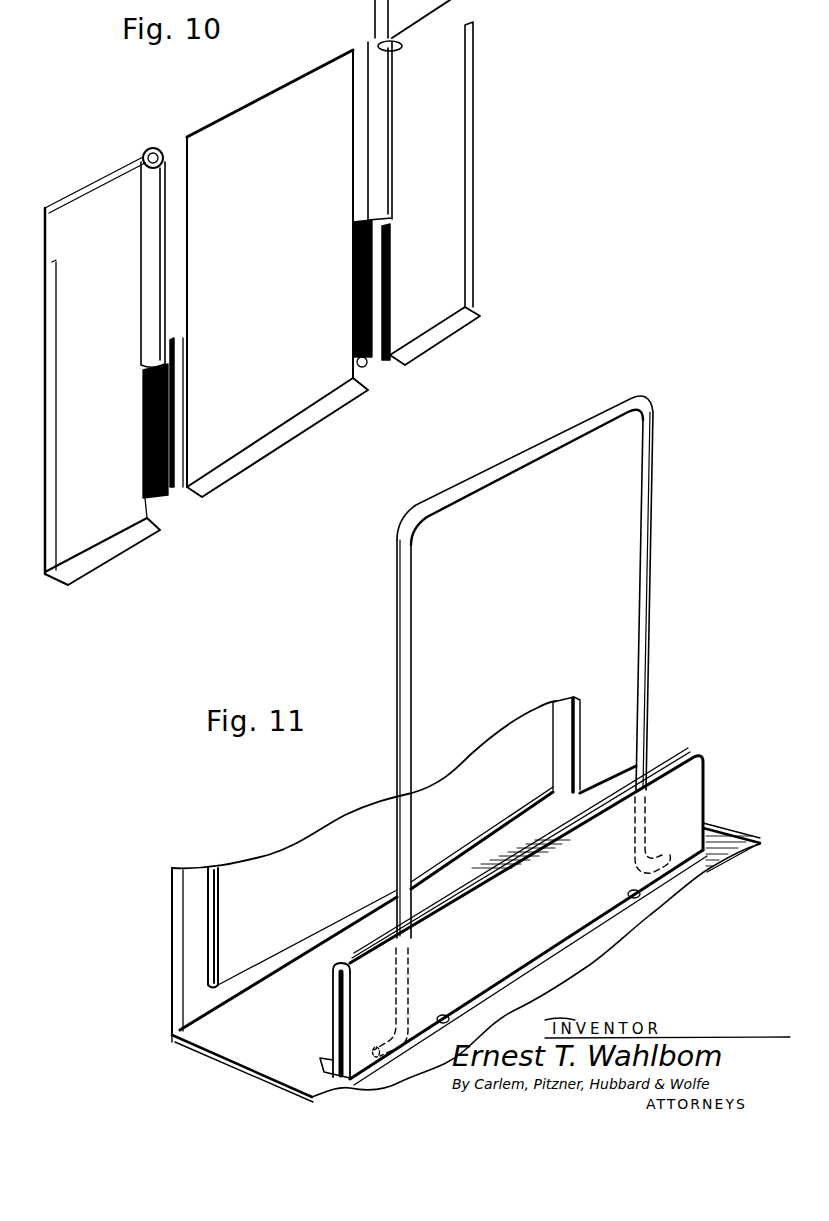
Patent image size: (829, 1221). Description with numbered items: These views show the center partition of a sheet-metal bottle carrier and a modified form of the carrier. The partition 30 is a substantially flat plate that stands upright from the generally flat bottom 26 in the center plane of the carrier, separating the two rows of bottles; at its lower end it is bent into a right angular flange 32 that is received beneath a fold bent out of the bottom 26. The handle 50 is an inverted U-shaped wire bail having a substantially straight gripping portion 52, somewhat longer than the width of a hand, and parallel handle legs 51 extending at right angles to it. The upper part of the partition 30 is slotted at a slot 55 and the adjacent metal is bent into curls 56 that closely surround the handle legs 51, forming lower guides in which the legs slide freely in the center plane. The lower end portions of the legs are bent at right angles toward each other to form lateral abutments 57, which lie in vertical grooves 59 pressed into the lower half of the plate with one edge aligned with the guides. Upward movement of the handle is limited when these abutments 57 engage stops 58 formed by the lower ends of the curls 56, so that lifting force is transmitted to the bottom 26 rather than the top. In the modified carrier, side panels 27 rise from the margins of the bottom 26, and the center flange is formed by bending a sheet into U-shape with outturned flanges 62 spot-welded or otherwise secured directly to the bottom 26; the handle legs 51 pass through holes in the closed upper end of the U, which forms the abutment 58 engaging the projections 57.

In FIG. 11, the bottom 26 is at (218, 1040).
In FIG. 11, the side panels 27 is at (167, 868).
In FIG. 10, the partition 30 is at (252, 120).
In FIG. 11, the partition 30 is at (697, 780).
In FIG. 10, the right angular flange 32 is at (263, 448).
In FIG. 11, the handle 50 is at (551, 667).
In FIG. 11, the handle legs 51 is at (647, 572).
In FIG. 11, the gripping portion 52 is at (523, 452).
In FIG. 10, the slot 55 is at (184, 152).
In FIG. 10, the curls 56 is at (155, 283).
In FIG. 10, the abutments 57 is at (370, 364).
In FIG. 11, the abutments 57 is at (388, 1040).
In FIG. 10, the stops 58 is at (152, 375).
In FIG. 11, the stops 58 is at (333, 975).
In FIG. 10, the vertical grooves 59 is at (152, 450).
In FIG. 11, the outturned flanges 62 is at (322, 1062).